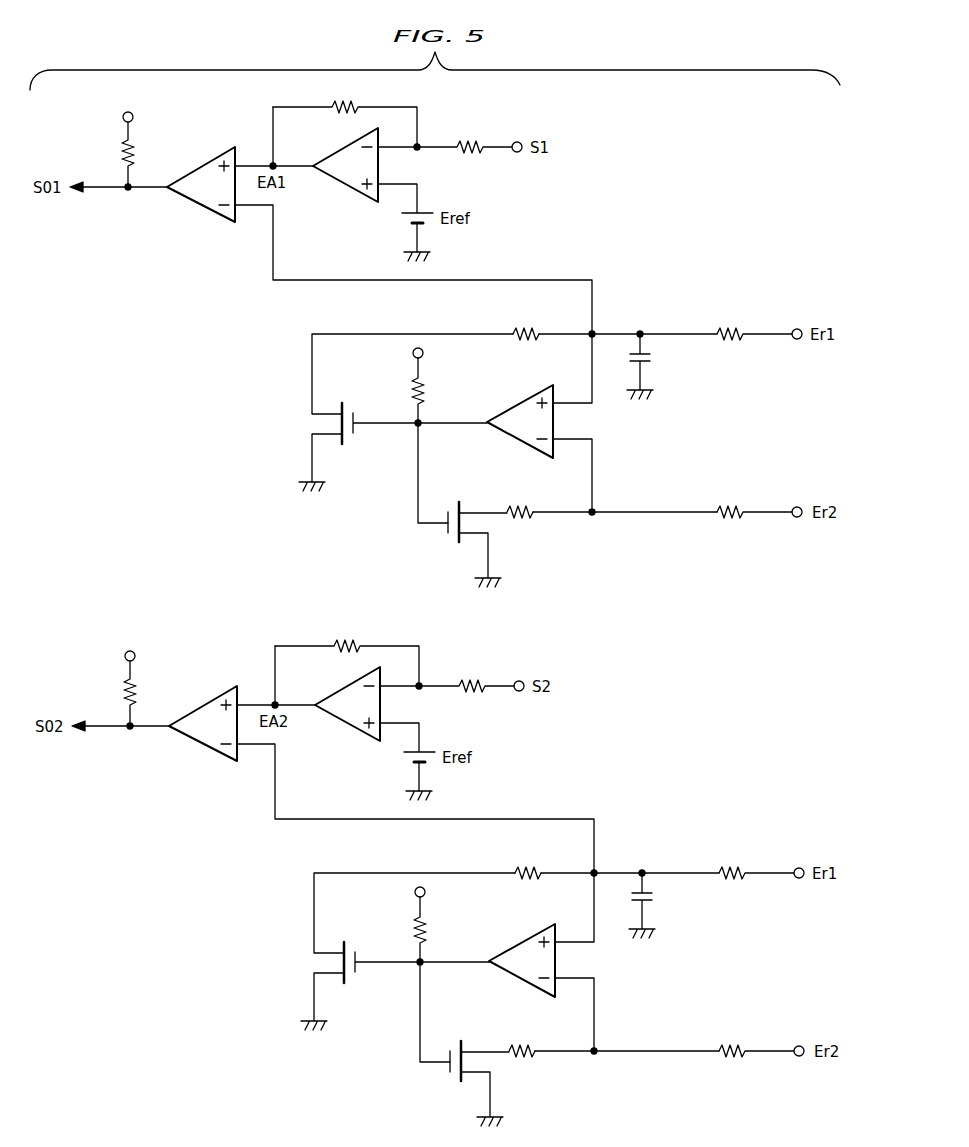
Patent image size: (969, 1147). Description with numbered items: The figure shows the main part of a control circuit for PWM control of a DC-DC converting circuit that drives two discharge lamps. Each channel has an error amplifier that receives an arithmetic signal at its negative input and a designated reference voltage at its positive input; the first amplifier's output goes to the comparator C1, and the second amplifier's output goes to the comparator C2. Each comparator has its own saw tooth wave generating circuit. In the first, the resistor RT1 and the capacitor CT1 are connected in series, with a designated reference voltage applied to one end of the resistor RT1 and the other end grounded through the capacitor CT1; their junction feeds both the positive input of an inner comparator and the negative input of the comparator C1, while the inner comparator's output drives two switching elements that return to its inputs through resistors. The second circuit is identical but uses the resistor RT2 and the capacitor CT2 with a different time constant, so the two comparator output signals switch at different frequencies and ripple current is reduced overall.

The comparator C1 is at (202, 165).
The resistor RT1 is at (740, 328).
The capacitor CT1 is at (655, 357).
The comparator C2 is at (203, 716).
The resistor RT2 is at (761, 856).
The capacitor CT2 is at (670, 905).